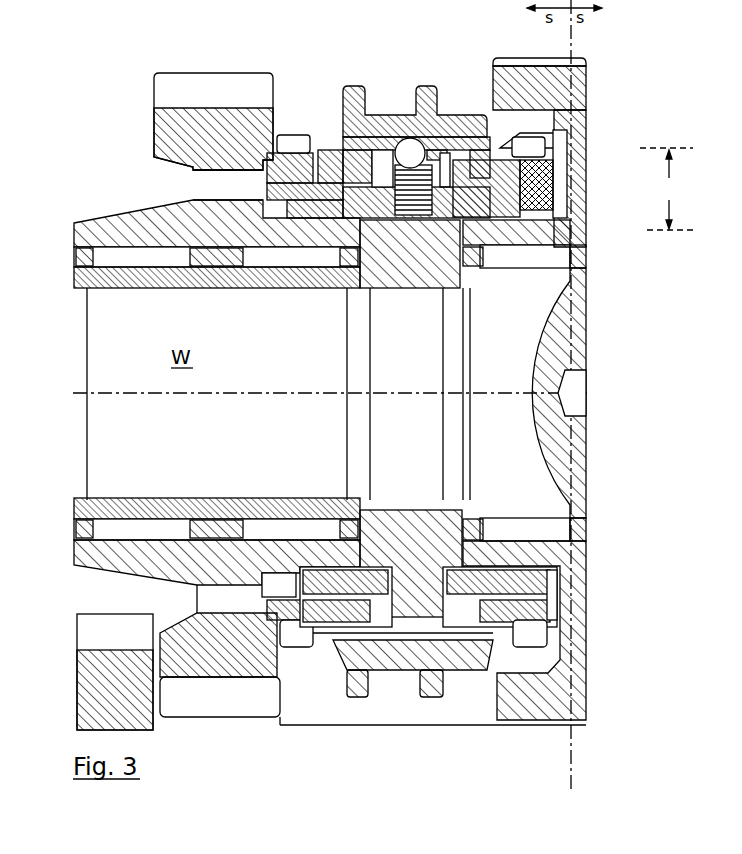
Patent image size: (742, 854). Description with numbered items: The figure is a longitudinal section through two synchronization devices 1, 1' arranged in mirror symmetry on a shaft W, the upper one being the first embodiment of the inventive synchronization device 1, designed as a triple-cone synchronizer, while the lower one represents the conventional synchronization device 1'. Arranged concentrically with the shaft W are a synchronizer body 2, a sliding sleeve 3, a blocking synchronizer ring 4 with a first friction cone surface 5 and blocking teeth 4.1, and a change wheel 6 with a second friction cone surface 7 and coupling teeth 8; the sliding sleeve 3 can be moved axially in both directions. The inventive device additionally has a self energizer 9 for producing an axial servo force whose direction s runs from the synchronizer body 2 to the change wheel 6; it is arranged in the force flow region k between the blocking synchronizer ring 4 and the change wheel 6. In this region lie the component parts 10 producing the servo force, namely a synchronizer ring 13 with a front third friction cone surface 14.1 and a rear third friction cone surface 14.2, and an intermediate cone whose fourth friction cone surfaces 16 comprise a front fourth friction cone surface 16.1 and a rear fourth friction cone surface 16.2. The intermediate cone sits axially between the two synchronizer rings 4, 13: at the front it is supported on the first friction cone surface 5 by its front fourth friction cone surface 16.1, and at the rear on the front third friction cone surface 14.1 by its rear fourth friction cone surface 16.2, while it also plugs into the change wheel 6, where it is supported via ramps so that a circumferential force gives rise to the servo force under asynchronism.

The synchronization device 1 is at (217, 148).
The synchronization device 1' is at (686, 128).
The synchronizer body 2 is at (440, 263).
The sliding sleeve 3 is at (377, 115).
The blocking synchronizer ring 4 is at (266, 163).
The blocking teeth 4.1 is at (503, 148).
The first friction cone surface 5 is at (280, 52).
The change wheel 6 is at (157, 84).
The second friction cone surface 7 is at (433, 160).
The coupling teeth 8 is at (513, 143).
The self energizer 9 is at (574, 197).
The component part 10 is at (497, 198).
The synchronizer ring 13 is at (258, 188).
The front third friction cone surface 14.1 is at (416, 123).
The rear third friction cone surface 14.2 is at (300, 250).
The seal 16 is at (263, 168).
The front fourth friction cone surface 16.1 is at (340, 170).
The rear fourth friction cone surface 16.2 is at (307, 243).